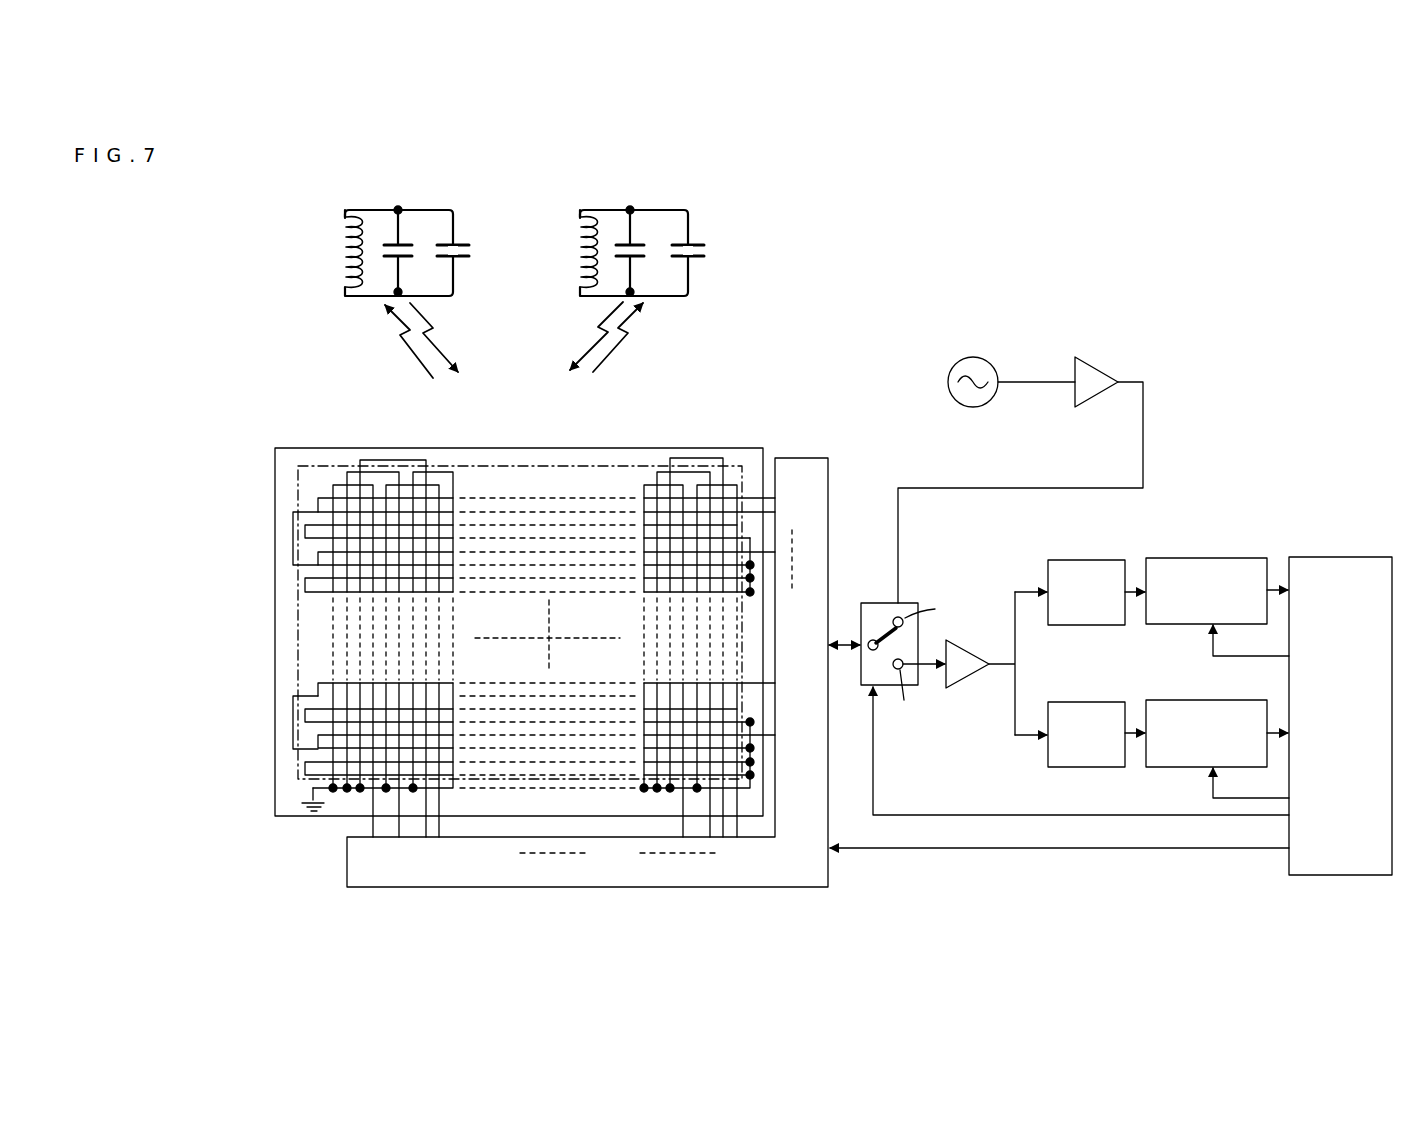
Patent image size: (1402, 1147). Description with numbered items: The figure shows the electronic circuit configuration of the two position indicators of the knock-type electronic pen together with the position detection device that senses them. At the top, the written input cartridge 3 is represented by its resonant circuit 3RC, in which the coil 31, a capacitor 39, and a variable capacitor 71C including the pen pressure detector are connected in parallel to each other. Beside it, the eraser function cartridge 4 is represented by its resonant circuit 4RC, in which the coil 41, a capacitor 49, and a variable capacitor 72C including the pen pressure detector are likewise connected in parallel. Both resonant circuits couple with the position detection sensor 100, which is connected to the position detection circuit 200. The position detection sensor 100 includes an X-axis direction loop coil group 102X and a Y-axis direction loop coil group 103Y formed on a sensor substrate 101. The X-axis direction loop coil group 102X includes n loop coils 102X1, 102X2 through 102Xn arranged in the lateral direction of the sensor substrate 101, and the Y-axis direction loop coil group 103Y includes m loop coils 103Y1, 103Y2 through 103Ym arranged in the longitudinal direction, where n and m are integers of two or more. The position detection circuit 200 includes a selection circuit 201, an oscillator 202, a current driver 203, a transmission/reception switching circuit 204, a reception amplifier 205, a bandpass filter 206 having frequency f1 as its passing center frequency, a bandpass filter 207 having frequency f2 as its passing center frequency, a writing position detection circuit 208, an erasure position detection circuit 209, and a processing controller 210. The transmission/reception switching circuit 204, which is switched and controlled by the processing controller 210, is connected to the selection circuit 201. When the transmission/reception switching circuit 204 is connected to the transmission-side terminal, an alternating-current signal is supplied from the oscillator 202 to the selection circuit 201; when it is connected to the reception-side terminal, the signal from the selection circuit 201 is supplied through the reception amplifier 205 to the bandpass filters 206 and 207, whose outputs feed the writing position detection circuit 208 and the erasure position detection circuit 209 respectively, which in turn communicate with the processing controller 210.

The written input cartridge 3 is at (346, 198).
The eraser function cartridge 4 is at (579, 198).
The resonant circuit 3RC is at (442, 195).
The resonant circuit 4RC is at (676, 195).
The coil 31 is at (343, 245).
The coil 41 is at (578, 245).
The capacitor 39 is at (388, 250).
The capacitor 49 is at (638, 258).
The variable capacitor 71C is at (461, 260).
The variable capacitor 72C is at (696, 260).
The position detection sensor 100 is at (266, 808).
The sensor substrate 101 is at (303, 459).
The X-axis direction loop coil group 102X is at (720, 390).
The loop coil 102X1 is at (343, 469).
The loop coil 102X2 is at (394, 469).
The loop coil 102Xn is at (682, 458).
The Y-axis direction loop coil group 103Y is at (186, 785).
The loop coil 103Y1 is at (317, 503).
The loop coil 103Y2 is at (292, 541).
The loop coil 103Ym is at (292, 735).
The position detection circuit 200 is at (1196, 373).
The selection circuit 201 is at (800, 457).
The oscillator 202 is at (968, 407).
The current driver 203 is at (1104, 390).
The transmission/reception switching circuit 204 is at (870, 602).
The reception amplifier 205 is at (967, 682).
The bandpass filter 206 is at (1076, 700).
The bandpass filter 207 is at (1076, 558).
The writing position detection circuit 208 is at (1174, 700).
The erasure position detection circuit 209 is at (1196, 558).
The processing controller 210 is at (1316, 558).